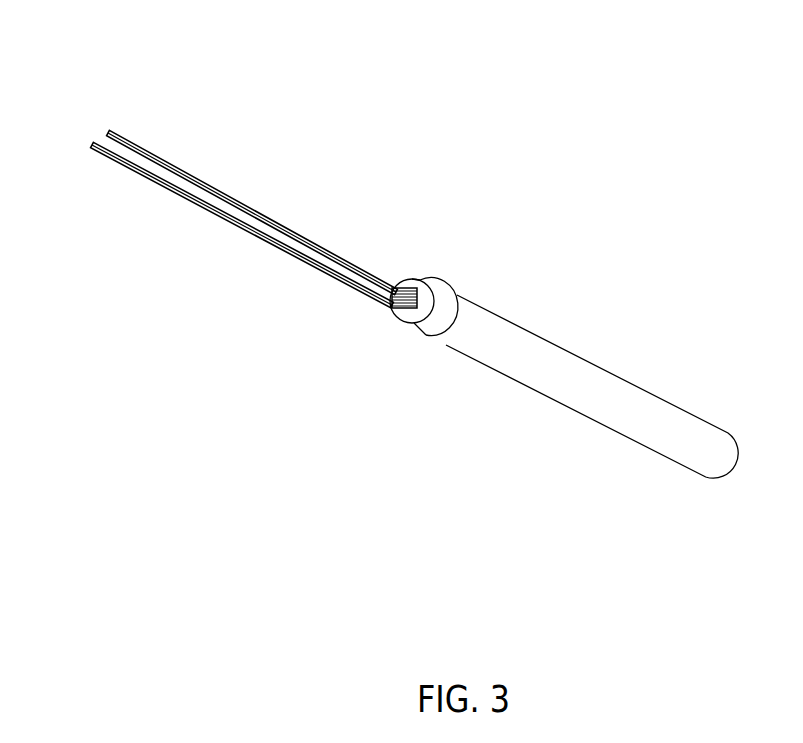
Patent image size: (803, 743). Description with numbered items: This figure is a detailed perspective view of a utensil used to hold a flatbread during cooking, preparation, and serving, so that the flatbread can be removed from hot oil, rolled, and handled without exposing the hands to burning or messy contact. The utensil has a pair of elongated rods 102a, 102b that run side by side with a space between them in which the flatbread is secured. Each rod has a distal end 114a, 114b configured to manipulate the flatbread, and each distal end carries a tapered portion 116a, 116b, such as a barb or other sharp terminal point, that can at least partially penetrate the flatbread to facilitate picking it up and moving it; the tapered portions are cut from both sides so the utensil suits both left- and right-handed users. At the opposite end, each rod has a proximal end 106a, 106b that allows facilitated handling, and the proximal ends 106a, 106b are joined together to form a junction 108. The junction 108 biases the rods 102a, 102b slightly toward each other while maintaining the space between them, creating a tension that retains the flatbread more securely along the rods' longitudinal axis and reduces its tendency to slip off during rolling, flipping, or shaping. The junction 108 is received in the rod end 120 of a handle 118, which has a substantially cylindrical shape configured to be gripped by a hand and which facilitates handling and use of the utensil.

The rod 102a is at (223, 164).
The rod 102b is at (213, 264).
The distal end 114a is at (163, 156).
The distal end 114b is at (130, 169).
The tapered portion 116a is at (107, 132).
The tapered portion 116b is at (91, 146).
The proximal end 106a is at (375, 272).
The proximal end 106b is at (352, 292).
The junction 108 is at (397, 282).
The rod end 120 is at (447, 287).
The handle 118 is at (617, 375).